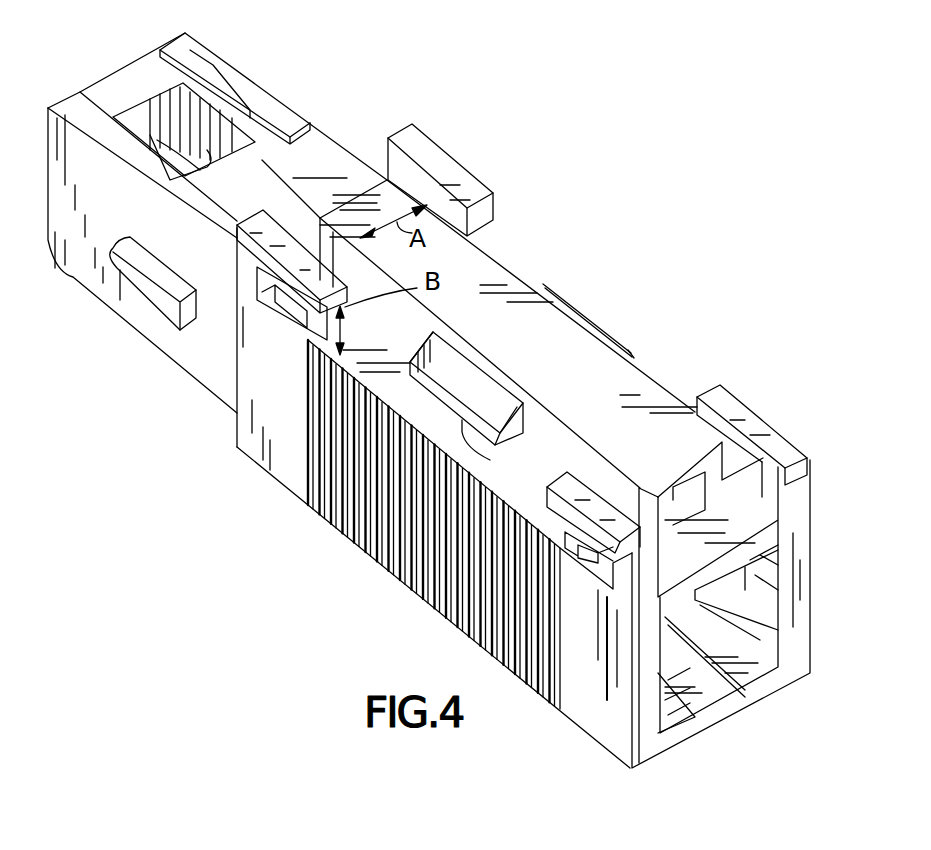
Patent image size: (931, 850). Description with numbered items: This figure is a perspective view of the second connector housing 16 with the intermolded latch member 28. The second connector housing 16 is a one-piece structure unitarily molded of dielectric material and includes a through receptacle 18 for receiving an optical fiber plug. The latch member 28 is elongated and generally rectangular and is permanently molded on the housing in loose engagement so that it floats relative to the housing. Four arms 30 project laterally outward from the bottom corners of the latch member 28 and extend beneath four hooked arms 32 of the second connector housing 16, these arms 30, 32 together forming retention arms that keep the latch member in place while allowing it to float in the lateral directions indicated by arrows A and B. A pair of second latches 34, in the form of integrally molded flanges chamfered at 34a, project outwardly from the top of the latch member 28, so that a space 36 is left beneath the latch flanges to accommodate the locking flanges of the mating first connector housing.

The second connector housing 16 is at (288, 468).
The through receptacle 18 is at (710, 690).
The latch member 28 is at (495, 277).
The arms 30 is at (295, 307).
The hooked arms 32 is at (280, 240).
The second latches 34 is at (509, 423).
The chamfer 34a is at (450, 379).
The space 36 is at (495, 450).